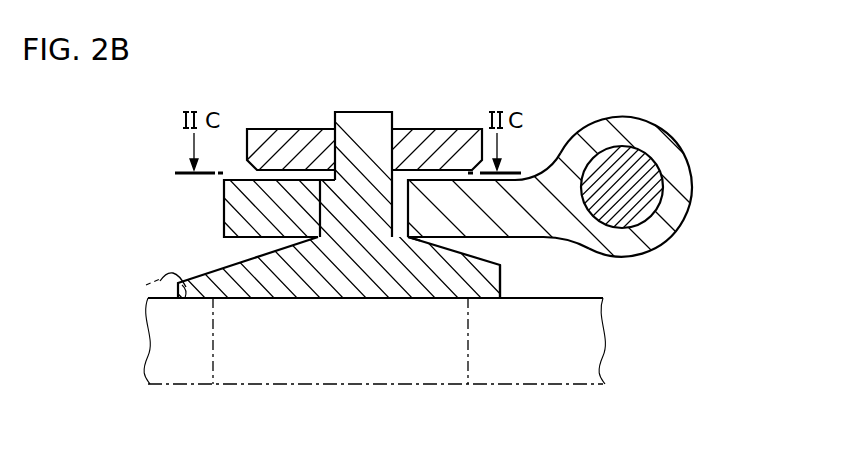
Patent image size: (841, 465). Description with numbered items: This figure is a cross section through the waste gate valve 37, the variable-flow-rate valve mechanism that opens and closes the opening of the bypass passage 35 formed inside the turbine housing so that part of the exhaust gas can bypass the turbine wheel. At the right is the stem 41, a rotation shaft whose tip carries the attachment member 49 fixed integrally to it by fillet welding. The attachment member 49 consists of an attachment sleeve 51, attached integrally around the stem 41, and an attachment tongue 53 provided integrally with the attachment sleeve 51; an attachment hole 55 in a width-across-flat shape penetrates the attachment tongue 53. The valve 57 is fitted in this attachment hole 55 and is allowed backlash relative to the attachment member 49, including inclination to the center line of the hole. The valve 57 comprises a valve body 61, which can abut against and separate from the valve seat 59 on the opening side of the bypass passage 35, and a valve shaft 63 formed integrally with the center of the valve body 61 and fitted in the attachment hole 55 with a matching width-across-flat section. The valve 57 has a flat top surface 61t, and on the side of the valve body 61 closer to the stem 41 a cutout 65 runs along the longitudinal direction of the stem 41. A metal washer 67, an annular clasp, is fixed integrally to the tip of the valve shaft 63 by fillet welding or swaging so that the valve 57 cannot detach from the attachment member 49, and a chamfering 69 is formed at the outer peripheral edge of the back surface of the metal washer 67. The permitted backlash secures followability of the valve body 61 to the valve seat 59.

The waste gate valve 37 is at (467, 82).
The attachment member 49 is at (667, 55).
The attachment tongue 53 is at (518, 176).
The attachment sleeve 51 is at (647, 128).
The stem 41 is at (628, 203).
The metal washer 67 is at (420, 142).
The chamfering 69 is at (240, 168).
The valve 57 is at (112, 165).
The valve shaft 63 is at (320, 205).
The valve body 61 is at (243, 262).
The flat top surface 61t is at (415, 238).
The valve seat 59 is at (147, 284).
The cutout 65 is at (500, 284).
The attachment hole 55 is at (407, 221).
The bypass passage 35 is at (467, 347).